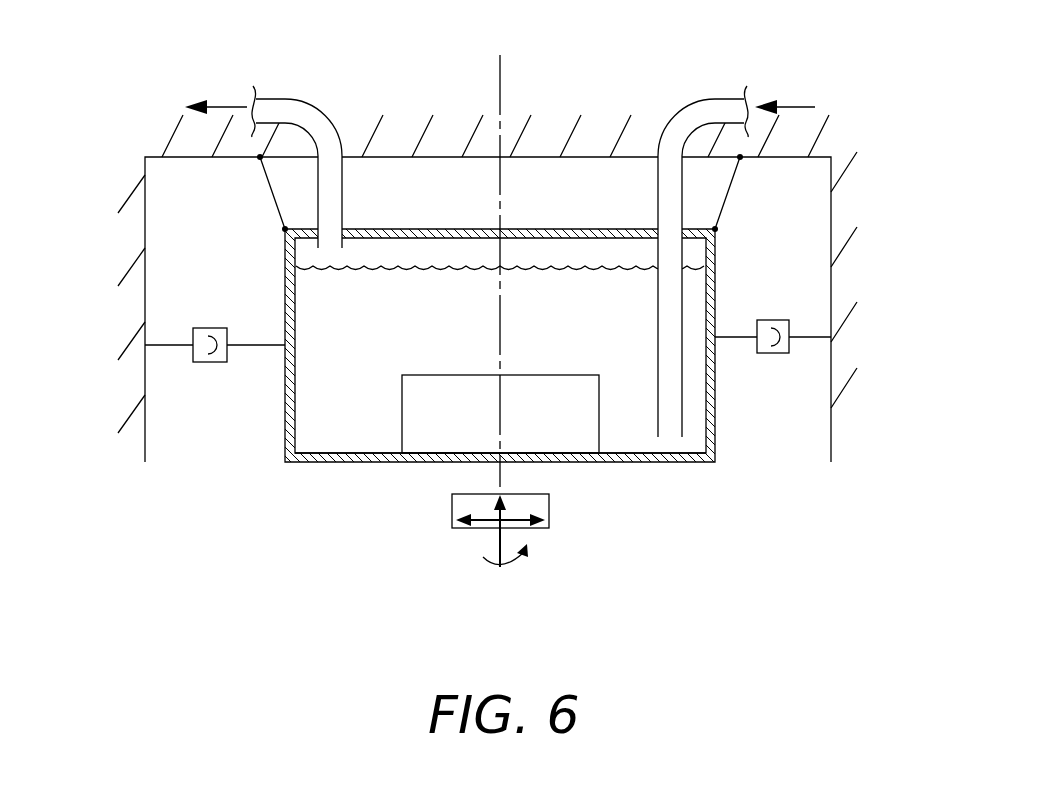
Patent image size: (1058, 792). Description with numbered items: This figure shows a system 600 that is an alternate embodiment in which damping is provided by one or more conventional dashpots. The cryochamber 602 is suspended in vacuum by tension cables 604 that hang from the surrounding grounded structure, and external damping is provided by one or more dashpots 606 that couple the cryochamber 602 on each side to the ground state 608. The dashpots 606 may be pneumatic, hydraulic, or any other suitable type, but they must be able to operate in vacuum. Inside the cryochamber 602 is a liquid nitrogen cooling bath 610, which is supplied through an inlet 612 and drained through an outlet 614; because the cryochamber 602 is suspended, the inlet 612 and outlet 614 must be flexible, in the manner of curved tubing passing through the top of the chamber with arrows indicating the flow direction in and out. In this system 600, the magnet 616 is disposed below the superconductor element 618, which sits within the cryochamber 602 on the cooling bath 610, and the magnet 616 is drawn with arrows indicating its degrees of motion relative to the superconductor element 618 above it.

The system 600 is at (495, 305).
The cryochamber 602 is at (286, 295).
The tension cables 604 is at (272, 197).
The dashpots 606 is at (193, 334).
The ground state 608 is at (826, 157).
The liquid nitrogen cooling bath 610 is at (303, 435).
The inlet 612 is at (705, 101).
The outlet 614 is at (287, 99).
The magnet 616 is at (468, 528).
The superconductor element 618 is at (445, 442).